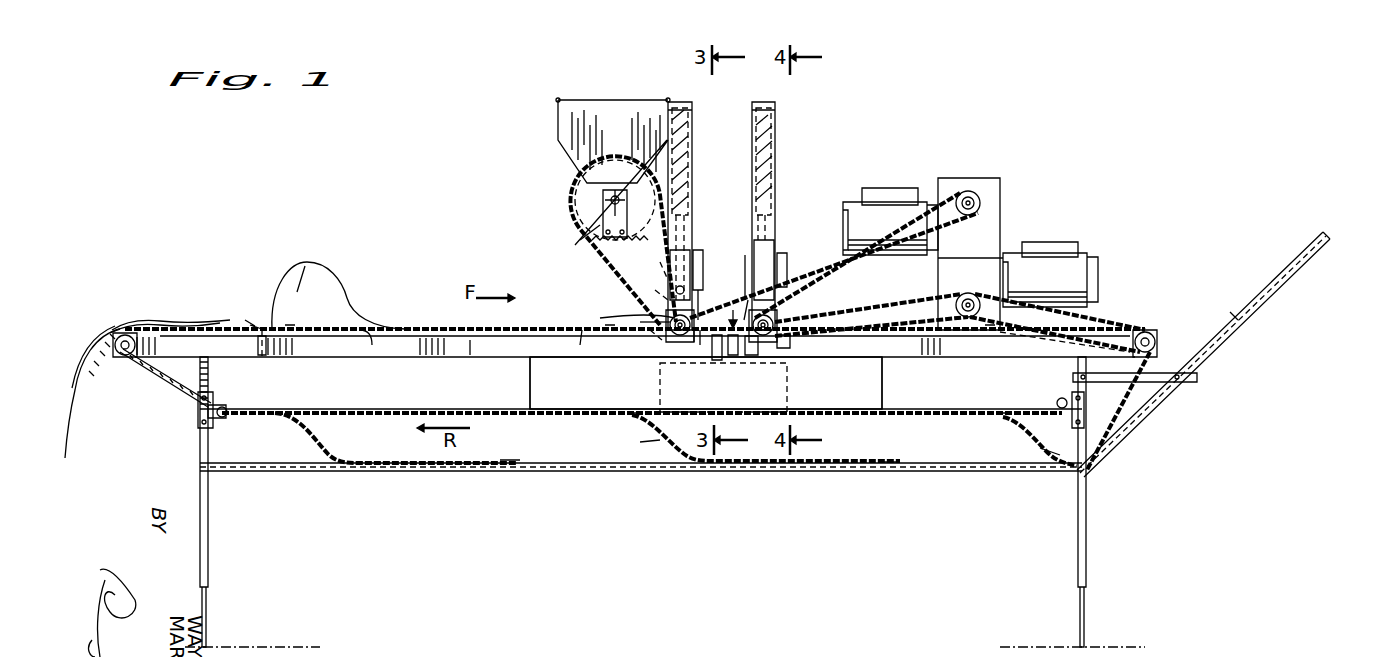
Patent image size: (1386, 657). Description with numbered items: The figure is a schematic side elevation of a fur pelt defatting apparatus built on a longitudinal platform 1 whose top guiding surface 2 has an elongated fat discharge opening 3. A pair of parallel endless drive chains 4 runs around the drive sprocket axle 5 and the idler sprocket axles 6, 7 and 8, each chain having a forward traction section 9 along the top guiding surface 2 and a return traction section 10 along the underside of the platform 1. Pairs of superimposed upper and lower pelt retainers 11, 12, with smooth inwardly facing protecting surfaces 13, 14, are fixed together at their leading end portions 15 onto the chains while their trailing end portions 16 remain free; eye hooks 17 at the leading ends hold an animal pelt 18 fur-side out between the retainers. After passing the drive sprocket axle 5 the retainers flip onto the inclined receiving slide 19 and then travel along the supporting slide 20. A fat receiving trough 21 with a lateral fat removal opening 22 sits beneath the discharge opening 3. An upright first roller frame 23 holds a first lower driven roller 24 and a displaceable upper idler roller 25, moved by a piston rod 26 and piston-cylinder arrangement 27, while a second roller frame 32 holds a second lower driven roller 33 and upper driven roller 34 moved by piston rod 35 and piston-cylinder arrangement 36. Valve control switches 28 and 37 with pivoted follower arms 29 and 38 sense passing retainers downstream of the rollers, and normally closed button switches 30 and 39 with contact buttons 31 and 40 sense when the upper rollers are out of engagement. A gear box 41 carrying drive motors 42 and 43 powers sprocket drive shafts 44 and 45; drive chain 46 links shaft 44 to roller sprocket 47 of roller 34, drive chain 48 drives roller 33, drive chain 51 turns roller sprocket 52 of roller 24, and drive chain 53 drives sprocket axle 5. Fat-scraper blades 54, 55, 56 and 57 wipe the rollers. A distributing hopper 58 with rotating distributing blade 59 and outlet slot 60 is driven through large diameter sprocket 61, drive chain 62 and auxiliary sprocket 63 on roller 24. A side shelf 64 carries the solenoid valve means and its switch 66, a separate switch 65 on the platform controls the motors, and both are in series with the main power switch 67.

The longitudinal platform 1 is at (360, 360).
The top guiding surface 2 is at (345, 325).
The fat discharge opening 3 is at (726, 309).
The endless drive chains 4 is at (178, 392).
The drive sprocket axle 5 is at (1156, 336).
The idler sprocket axle 6 is at (1058, 400).
The idler sprocket axle 7 is at (228, 408).
The idler sprocket axle 8 is at (122, 358).
The forward traction section 9 is at (480, 352).
The return traction section 10 is at (520, 400).
The upper pelt retainer 11 is at (302, 270).
The lower pelt retainer 12 is at (70, 428).
The protecting surface 13 is at (290, 270).
The protecting surface 14 is at (76, 365).
The leading end portions 15 is at (292, 327).
The trailing end portions 16 is at (462, 327).
The eye hooks 17 is at (265, 325).
The animal pelt 18 is at (135, 322).
The inclined receiving slide 19 is at (1320, 248).
The supporting slide 20 is at (575, 472).
The fat receiving trough 21 is at (885, 367).
The lateral fat removal opening 22 is at (800, 414).
The first roller frame 23 is at (694, 112).
The first lower driven roller 24 is at (682, 342).
The first upper idler roller 25 is at (668, 300).
The piston rod 26 is at (690, 260).
The piston-cylinder arrangement 27 is at (690, 140).
The valve control switch 28 is at (703, 262).
The follower arm 29 is at (706, 292).
The button switch 30 is at (690, 230).
The contact button 31 is at (690, 245).
The second roller frame 32 is at (778, 112).
The second lower driven roller 33 is at (765, 348).
The second upper driven roller 34 is at (800, 280).
The piston rod 35 is at (776, 242).
The piston-cylinder arrangement 36 is at (774, 150).
The valve control switch 37 is at (788, 262).
The follower arm 38 is at (838, 302).
The button switch 39 is at (775, 215).
The contact button 40 is at (776, 228).
The gear box 41 is at (968, 182).
The drive motor 42 is at (905, 190).
The drive motor 43 is at (1060, 245).
The sprocket drive shaft 44 is at (982, 202).
The sprocket drive shaft 45 is at (975, 296).
The drive chain 46 is at (990, 222).
The roller sprocket 47 is at (750, 302).
The drive chain 48 is at (938, 300).
The drive chain 51 is at (704, 348).
The roller sprocket 52 is at (665, 330).
The drive chain 53 is at (1110, 300).
The fat-scraper blade 54 is at (656, 338).
The fat-scraper blade 55 is at (743, 342).
The fat-scraper blade 56 is at (668, 276).
The fat-scraper blade 57 is at (746, 256).
The distributing hopper 58 is at (612, 110).
The rotating distributing blade 59 is at (602, 204).
The outlet slot 60 is at (592, 234).
The large diameter sprocket 61 is at (578, 198).
The drive chain 62 is at (600, 258).
The auxiliary sprocket 63 is at (642, 320).
The side shelf 64 is at (790, 350).
The switch 65 is at (263, 348).
The switch 66 is at (792, 342).
The main power switch 67 is at (718, 362).